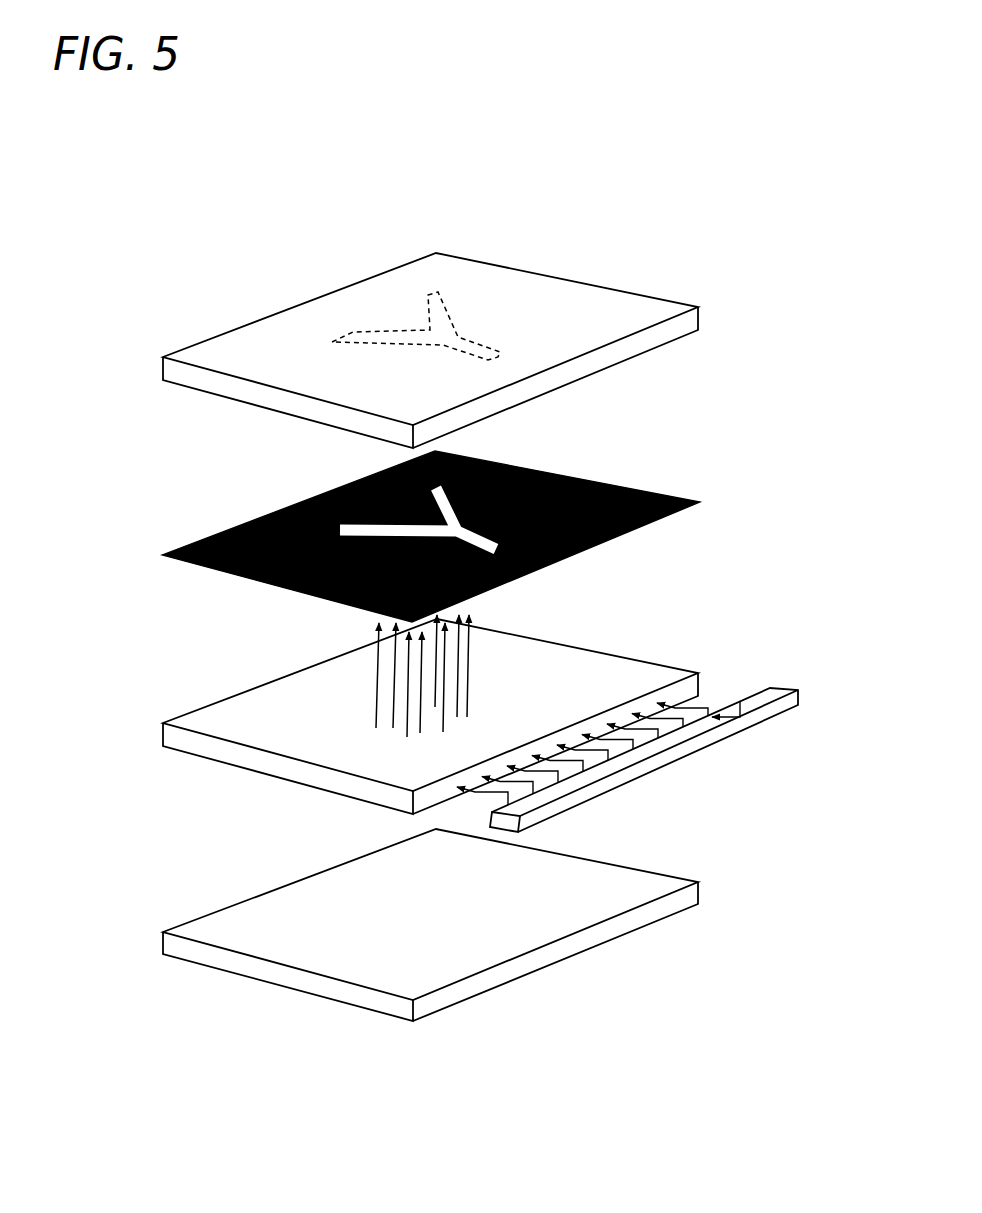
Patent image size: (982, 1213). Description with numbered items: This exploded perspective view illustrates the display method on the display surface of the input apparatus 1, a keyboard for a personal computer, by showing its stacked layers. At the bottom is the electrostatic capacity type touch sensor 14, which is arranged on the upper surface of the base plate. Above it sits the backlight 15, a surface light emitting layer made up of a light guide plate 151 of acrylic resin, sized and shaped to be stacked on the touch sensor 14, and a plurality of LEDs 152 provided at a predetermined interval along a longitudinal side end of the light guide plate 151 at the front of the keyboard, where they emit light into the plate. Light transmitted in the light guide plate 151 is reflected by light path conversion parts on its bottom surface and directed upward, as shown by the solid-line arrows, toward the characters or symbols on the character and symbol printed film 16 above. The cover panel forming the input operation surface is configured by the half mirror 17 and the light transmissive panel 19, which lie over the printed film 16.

The input apparatus 1 is at (738, 232).
The electrostatic capacity type touch sensor 14 is at (572, 953).
The backlight 15 is at (725, 653).
The light guide plate 151 is at (577, 648).
The LEDs 152 is at (748, 732).
The character and symbol printed film 16 is at (647, 492).
The half mirror 17 is at (623, 362).
The light transmissive panel 19 is at (517, 270).